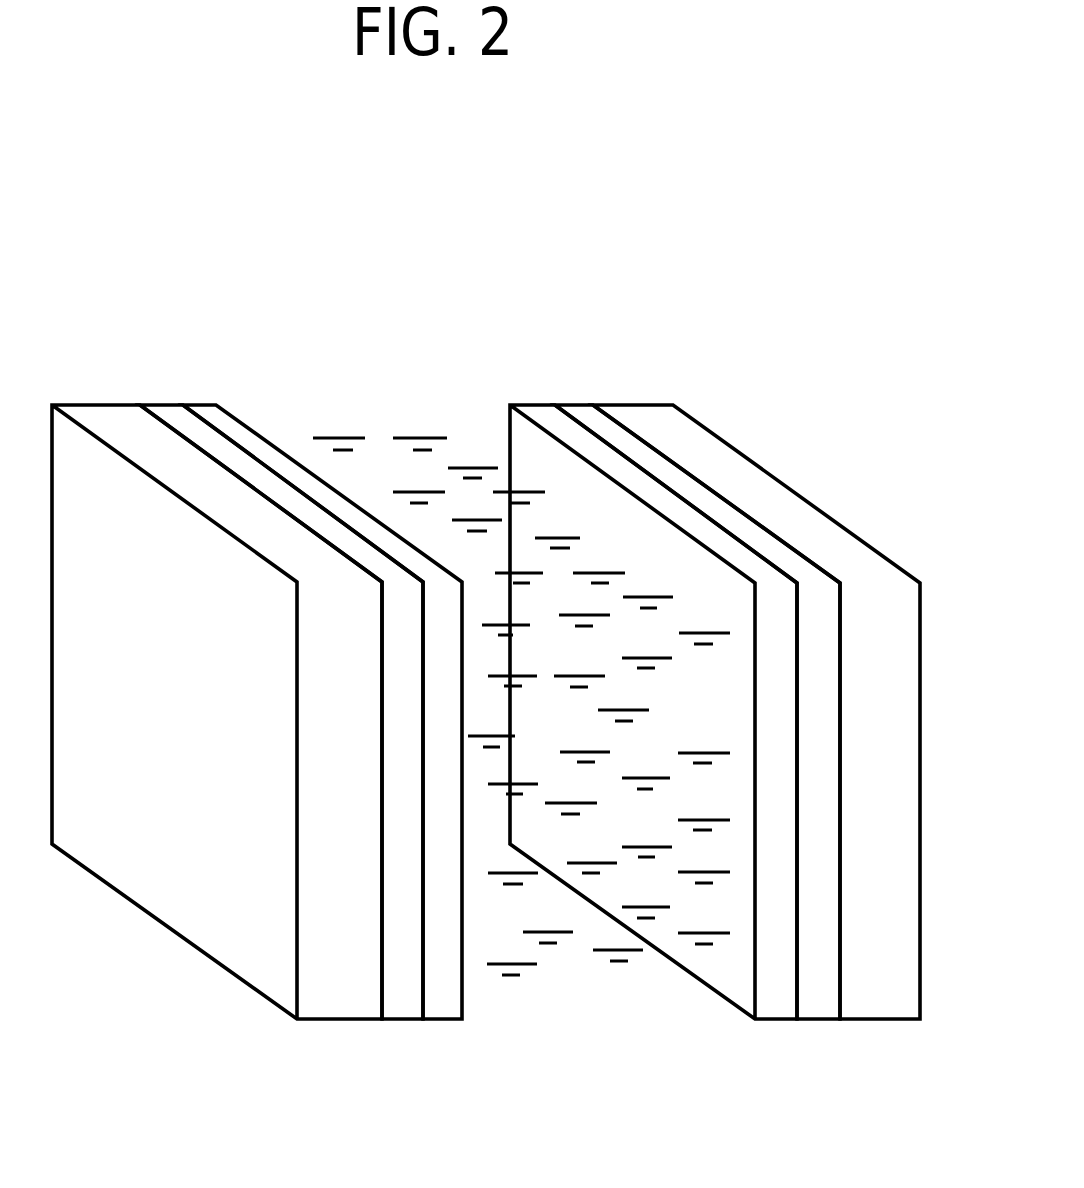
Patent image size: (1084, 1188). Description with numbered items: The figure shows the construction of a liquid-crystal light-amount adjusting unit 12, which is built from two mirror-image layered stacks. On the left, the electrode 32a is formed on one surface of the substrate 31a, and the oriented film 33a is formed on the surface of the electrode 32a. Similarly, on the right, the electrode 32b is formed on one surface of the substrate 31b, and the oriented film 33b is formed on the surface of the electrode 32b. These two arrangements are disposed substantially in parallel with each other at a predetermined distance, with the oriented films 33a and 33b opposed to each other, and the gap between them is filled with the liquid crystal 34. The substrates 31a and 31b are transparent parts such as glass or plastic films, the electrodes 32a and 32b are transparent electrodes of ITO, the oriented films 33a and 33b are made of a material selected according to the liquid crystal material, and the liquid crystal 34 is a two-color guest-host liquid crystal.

The liquid-crystal light-amount adjusting unit 12 is at (713, 295).
The substrate 31a is at (328, 993).
The electrode 32a is at (167, 415).
The oriented film 33a is at (442, 1002).
The substrate 31b is at (883, 995).
The electrode 32b is at (585, 418).
The oriented film 33b is at (773, 995).
The liquid crystal 34 is at (410, 443).